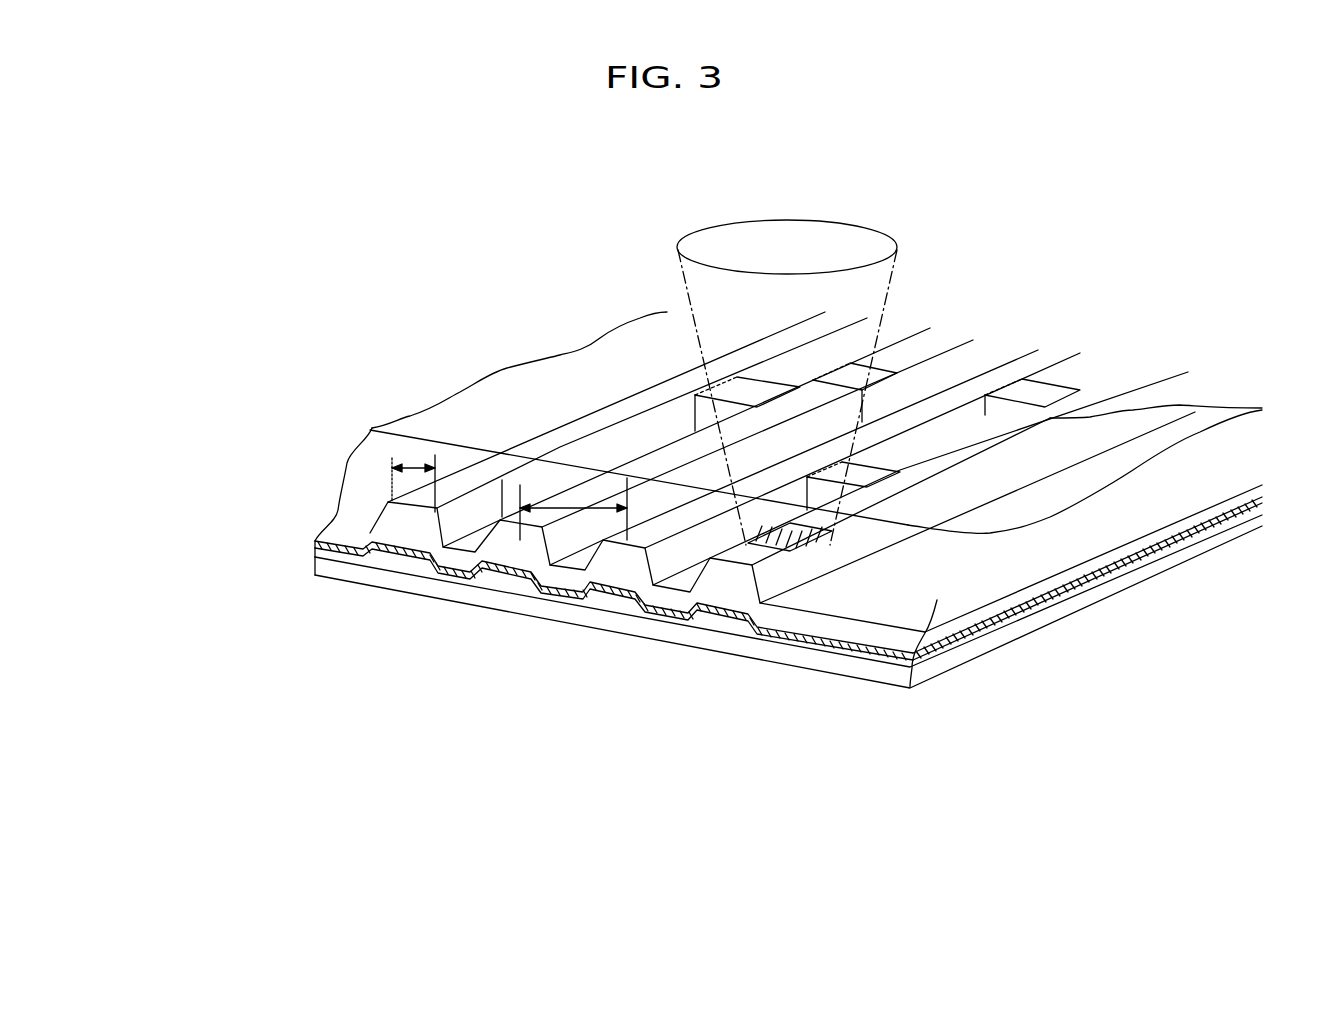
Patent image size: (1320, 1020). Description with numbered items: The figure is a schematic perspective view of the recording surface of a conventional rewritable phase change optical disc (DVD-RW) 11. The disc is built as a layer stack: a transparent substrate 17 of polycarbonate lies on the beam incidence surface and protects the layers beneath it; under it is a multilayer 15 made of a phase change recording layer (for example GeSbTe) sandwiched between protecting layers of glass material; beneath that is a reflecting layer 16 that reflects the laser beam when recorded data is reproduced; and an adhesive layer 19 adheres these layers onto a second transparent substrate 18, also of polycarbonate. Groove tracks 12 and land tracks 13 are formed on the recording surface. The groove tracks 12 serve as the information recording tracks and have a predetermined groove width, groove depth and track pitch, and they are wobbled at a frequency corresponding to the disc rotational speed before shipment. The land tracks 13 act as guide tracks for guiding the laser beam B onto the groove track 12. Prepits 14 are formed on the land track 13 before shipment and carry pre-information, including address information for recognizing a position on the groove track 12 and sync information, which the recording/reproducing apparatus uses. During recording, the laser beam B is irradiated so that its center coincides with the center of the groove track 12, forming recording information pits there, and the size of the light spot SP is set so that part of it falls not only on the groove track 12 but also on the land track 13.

The optical disc 11 is at (705, 488).
The groove track 12 is at (658, 458).
The land track 13 is at (462, 548).
The prepit 14 is at (868, 460).
The multilayer 15 is at (563, 580).
The reflecting layer 16 is at (477, 578).
The transparent substrate 17 is at (1115, 650).
The transparent substrate 18 is at (800, 660).
The adhesive layer 19 is at (352, 560).
The laser beam B is at (893, 286).
The light spot SP is at (822, 584).